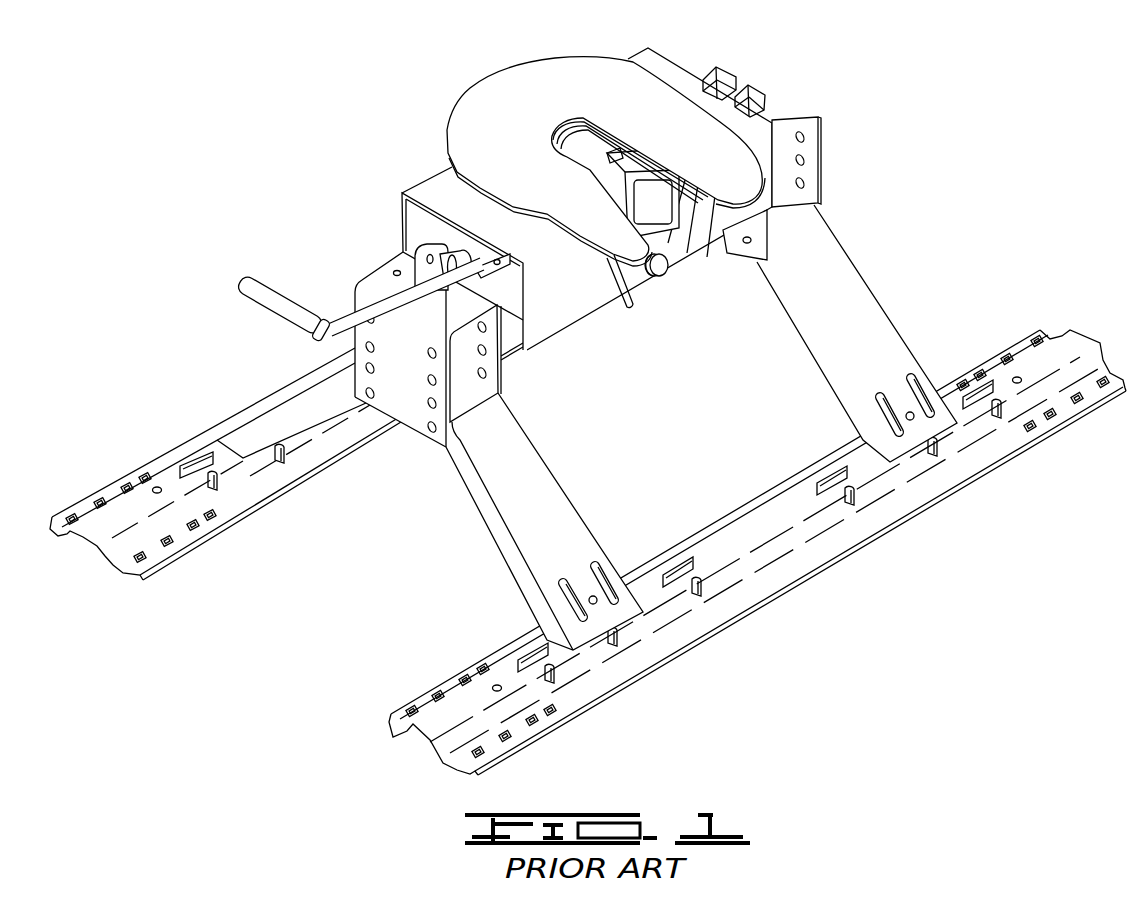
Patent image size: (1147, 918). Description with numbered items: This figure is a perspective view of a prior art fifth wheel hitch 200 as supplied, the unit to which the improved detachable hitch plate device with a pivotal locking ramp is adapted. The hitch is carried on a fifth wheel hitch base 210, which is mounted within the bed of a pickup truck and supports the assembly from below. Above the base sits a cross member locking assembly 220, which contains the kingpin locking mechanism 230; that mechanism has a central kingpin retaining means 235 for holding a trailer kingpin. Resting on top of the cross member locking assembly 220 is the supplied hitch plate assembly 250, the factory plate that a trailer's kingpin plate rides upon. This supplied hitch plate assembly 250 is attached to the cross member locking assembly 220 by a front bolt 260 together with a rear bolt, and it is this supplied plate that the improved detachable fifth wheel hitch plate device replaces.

The fifth wheel hitch 200 is at (927, 150).
The fifth wheel hitch base 210 is at (828, 290).
The cross member locking assembly 220 is at (760, 125).
The kingpin locking mechanism 230 is at (413, 307).
The central kingpin retaining means 235 is at (593, 167).
The supplied hitch plate assembly 250 is at (556, 84).
The front bolt 260 is at (666, 272).